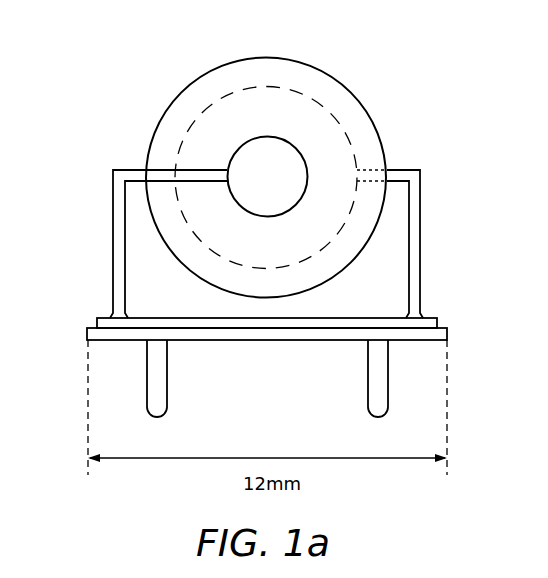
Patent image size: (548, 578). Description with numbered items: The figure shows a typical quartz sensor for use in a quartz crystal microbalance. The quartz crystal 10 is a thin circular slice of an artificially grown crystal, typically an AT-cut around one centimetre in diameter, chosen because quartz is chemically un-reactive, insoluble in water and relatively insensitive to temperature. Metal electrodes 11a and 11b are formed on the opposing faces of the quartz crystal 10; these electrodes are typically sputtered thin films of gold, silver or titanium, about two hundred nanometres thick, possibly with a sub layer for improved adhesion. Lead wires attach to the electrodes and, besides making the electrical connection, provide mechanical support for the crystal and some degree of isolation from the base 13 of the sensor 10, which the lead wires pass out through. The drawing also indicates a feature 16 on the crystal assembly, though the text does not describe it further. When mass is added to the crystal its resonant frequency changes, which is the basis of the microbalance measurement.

The quartz crystal 10 is at (76, 70).
The toroidal core 16 is at (225, 98).
The metal electrode 11b is at (348, 92).
The metal electrode 11a is at (258, 147).
The base 13 is at (452, 333).